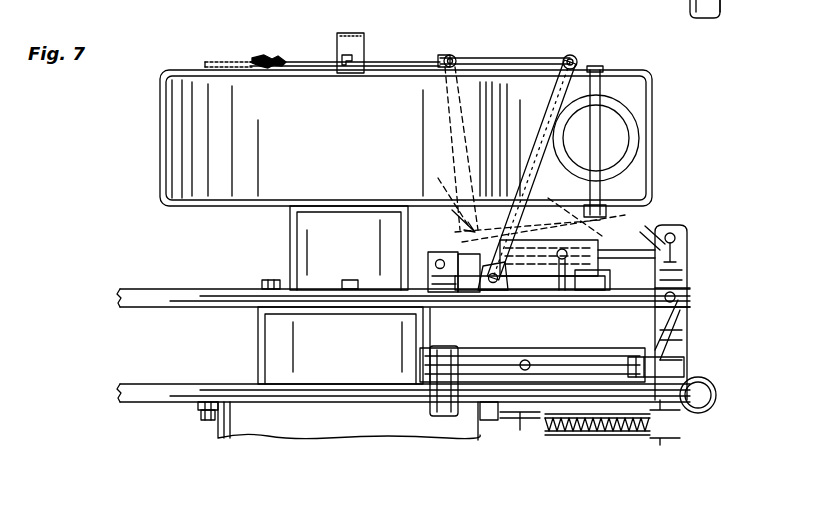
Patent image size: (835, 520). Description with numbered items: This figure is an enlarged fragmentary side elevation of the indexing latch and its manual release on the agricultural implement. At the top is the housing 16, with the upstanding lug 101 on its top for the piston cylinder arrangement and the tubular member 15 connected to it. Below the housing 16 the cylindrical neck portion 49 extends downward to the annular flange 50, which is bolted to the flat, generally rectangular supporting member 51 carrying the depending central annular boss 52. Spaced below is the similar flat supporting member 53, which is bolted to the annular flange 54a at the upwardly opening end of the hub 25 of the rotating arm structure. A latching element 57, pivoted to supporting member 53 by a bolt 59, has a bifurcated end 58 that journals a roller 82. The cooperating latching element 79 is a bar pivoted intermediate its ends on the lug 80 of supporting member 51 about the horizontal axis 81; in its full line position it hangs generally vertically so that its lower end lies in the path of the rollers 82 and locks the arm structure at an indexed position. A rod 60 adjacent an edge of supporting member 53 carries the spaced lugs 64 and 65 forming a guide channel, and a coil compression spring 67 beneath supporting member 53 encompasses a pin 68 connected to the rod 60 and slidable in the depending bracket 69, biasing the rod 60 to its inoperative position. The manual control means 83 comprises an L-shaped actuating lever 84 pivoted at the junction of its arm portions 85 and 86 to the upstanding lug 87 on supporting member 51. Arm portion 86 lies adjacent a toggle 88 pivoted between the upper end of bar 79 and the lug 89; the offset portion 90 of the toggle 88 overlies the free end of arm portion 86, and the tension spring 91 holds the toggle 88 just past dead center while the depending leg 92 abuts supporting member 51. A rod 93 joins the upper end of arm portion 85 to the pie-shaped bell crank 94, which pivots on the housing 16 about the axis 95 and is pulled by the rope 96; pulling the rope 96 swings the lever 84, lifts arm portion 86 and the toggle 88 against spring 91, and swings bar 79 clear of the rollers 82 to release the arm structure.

The tubular member 15 is at (628, 120).
The housing 16 is at (358, 136).
The hub 25 is at (276, 438).
The neck portion 49 is at (356, 252).
The annular flange 50 is at (260, 285).
The supporting member 51 is at (182, 305).
The annular boss 52 is at (350, 349).
The supporting member 53 is at (176, 384).
The annular flange 54a is at (218, 420).
The latching element 57 is at (494, 380).
The bifurcated end 58 is at (636, 430).
The bolt 59 is at (532, 414).
The rod 60 is at (716, 394).
The lug 64 is at (700, 378).
The lug 65 is at (660, 438).
The coil compression spring 67 is at (602, 432).
The supporting rod 68 is at (542, 428).
The depending bracket 69 is at (530, 425).
The latching element 79 is at (690, 262).
The lug 80 is at (688, 288).
The horizontal axis 81 is at (690, 298).
The roller 82 is at (695, 352).
The manual control means 83 is at (455, 222).
The actuating lever 84 is at (614, 75).
The arm portion 85 is at (572, 92).
The arm portion 86 is at (538, 276).
The upstanding lug 87 is at (504, 292).
The toggle 88 is at (470, 258).
The lug 89 is at (432, 305).
The offset portion 90 is at (605, 256).
The tension spring 91 is at (563, 292).
The depending leg 92 is at (590, 292).
The rod 93 is at (503, 58).
The bell crank 94 is at (300, 62).
The axis 95 is at (355, 58).
The rope 96 is at (218, 58).
The upstanding lug 101 is at (349, 33).